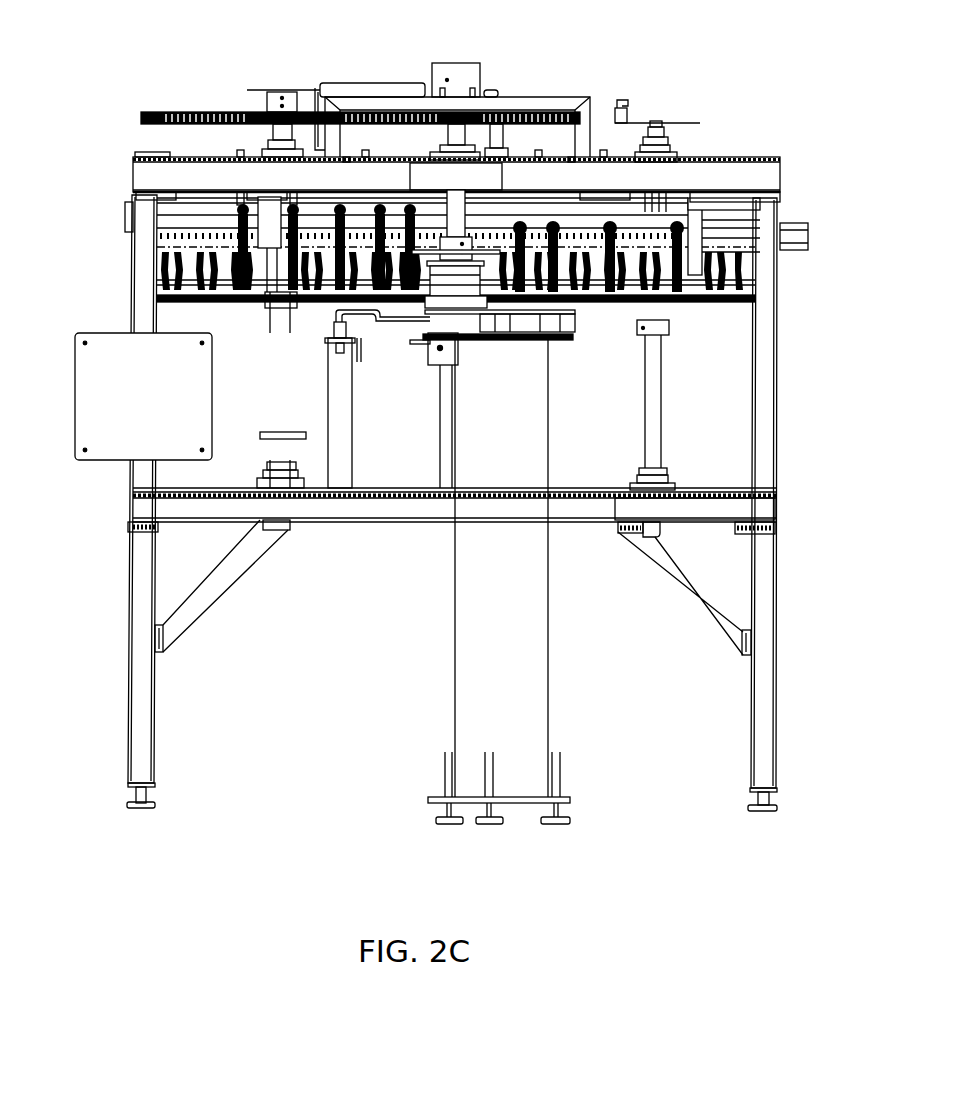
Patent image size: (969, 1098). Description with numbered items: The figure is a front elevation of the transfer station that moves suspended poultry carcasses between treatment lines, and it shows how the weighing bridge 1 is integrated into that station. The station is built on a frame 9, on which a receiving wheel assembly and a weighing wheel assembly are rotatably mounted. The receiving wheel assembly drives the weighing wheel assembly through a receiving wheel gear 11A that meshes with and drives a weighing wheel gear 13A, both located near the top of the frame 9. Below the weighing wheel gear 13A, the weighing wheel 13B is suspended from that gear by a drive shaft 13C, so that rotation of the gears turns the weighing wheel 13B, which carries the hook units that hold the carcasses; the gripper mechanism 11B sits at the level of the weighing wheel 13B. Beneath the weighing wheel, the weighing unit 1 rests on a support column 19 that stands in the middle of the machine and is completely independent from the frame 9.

The weighing bridge 1 is at (558, 619).
The frame 9 is at (765, 389).
The receiving wheel gear 11A is at (185, 111).
The gripper mechanism 11B is at (157, 277).
The weighing wheel gear 13A is at (542, 111).
The weighing wheel 13B is at (402, 312).
The drive shaft 13C is at (455, 213).
The support column 19 is at (515, 706).